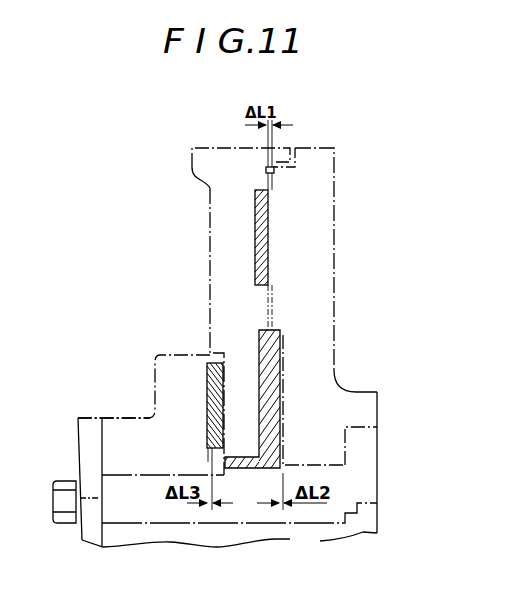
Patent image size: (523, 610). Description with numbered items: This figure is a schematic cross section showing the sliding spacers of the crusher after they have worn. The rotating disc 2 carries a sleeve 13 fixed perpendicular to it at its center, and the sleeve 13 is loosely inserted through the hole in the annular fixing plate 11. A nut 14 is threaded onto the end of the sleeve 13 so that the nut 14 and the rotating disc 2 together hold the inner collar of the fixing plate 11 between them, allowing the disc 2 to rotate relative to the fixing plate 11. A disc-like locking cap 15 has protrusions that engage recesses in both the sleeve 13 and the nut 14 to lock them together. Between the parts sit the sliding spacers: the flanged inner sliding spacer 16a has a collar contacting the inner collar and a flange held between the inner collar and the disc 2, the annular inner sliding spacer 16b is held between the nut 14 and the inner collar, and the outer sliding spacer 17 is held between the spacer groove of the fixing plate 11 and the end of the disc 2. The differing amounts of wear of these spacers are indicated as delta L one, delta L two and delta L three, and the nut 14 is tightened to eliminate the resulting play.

The rotating disc 2 is at (337, 330).
The fixing plate 11 is at (207, 224).
The sleeve 13 is at (381, 461).
The nut 14 is at (161, 352).
The locking cap 15 is at (76, 450).
The inner sliding spacer 16a is at (283, 413).
The inner sliding spacer 16b is at (207, 427).
The outer sliding spacer 17 is at (274, 227).